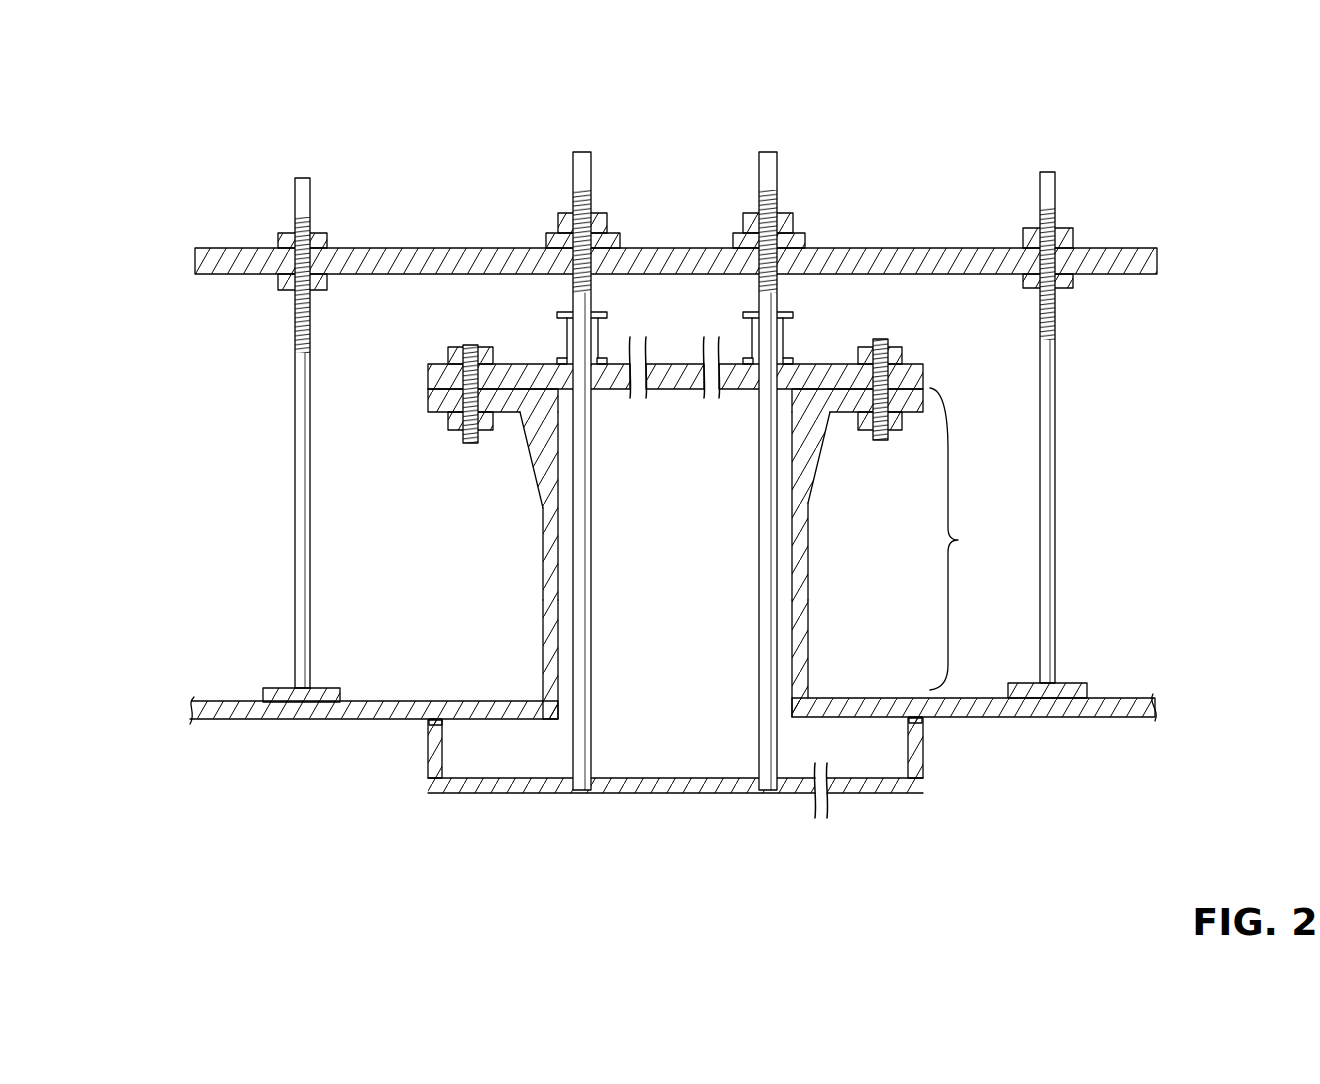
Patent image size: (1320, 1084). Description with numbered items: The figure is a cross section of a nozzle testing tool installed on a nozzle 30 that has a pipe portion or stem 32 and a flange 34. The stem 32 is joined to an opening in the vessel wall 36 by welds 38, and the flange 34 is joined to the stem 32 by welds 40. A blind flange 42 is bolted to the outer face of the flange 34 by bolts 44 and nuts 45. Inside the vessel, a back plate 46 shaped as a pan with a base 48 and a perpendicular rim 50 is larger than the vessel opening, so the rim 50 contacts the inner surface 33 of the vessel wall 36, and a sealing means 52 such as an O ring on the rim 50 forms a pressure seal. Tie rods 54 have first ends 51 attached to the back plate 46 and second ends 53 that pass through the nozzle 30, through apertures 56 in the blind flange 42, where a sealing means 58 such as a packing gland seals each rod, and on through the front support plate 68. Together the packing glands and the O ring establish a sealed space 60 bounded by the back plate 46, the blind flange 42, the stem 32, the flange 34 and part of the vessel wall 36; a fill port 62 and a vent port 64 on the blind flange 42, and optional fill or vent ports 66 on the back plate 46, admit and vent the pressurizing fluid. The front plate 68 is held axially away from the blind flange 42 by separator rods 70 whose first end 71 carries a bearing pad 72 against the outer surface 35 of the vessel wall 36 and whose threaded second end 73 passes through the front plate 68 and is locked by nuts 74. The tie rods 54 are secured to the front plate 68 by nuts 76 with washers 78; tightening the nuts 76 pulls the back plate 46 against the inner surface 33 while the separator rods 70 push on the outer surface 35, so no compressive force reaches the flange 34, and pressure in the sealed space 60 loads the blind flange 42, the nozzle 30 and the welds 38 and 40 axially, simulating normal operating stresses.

The nozzle 30 is at (663, 553).
The stem 32 is at (806, 587).
The inner surface 33 is at (705, 699).
The flange 34 is at (624, 554).
The outer surface 35 is at (1120, 684).
The vessel wall 36 is at (705, 699).
The welds 38 is at (548, 698).
The welds 40 is at (550, 506).
The blind flange 42 is at (679, 339).
The bolts 44 is at (700, 339).
The nuts 45 is at (448, 350).
The back plate 46 is at (676, 786).
The base 48 is at (544, 795).
The rim 50 is at (427, 786).
The first ends 51 is at (602, 770).
The sealing means 52 is at (427, 723).
The second ends 53 is at (676, 445).
The tie rods 54 is at (762, 650).
The apertures 56 is at (598, 410).
The sealing means 58 is at (556, 340).
The sealed space 60 is at (658, 556).
The fill port 62 is at (635, 340).
The vent port 64 is at (713, 340).
The fill or vent ports 66 is at (830, 805).
The front support plate 68 is at (373, 246).
The separator rods 70 is at (297, 578).
The first end 71 is at (656, 651).
The bearing pad 72 is at (272, 688).
The second end 73 is at (673, 247).
The nuts 74 is at (272, 238).
The nuts 76 is at (565, 220).
The washers 78 is at (620, 240).